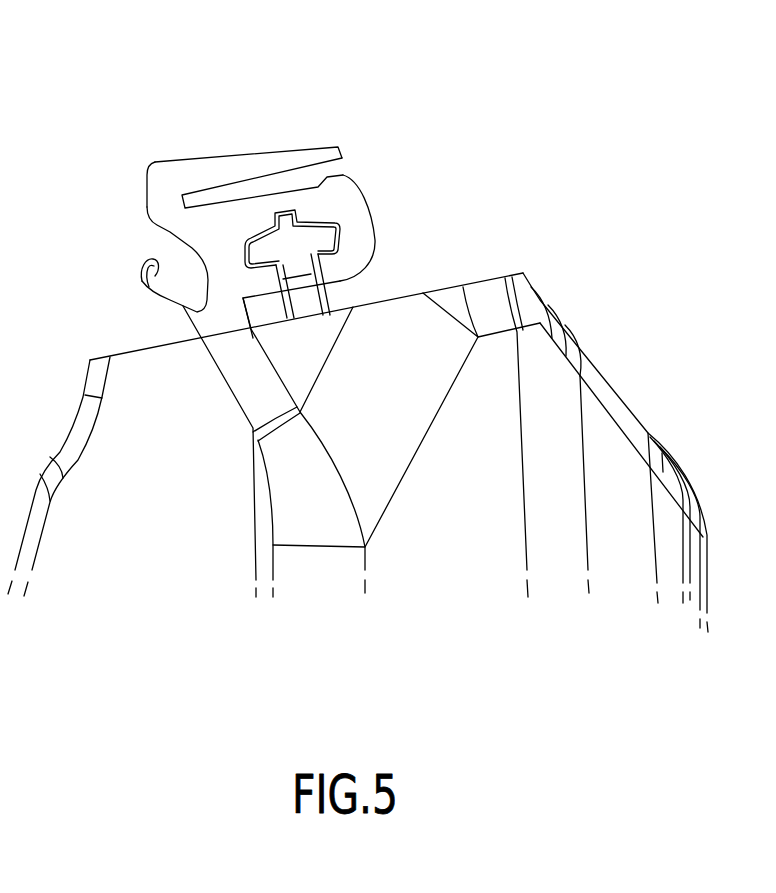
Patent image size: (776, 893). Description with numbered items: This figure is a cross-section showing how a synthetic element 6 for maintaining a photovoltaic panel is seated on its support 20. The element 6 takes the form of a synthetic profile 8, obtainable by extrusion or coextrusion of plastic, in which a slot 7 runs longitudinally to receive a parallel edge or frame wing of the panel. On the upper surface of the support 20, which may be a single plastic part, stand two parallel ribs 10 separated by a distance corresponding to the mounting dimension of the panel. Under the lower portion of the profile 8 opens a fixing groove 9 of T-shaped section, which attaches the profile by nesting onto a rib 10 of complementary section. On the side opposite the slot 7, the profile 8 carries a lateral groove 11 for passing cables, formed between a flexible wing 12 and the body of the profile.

The element for maintaining 6 is at (253, 187).
The synthetic profile 8 is at (228, 172).
The slot 7 is at (270, 187).
The fixing groove 9 is at (332, 255).
The rib 10 is at (313, 237).
The groove 11 is at (178, 277).
The flexible wing 12 is at (146, 272).
The support 20 is at (567, 398).